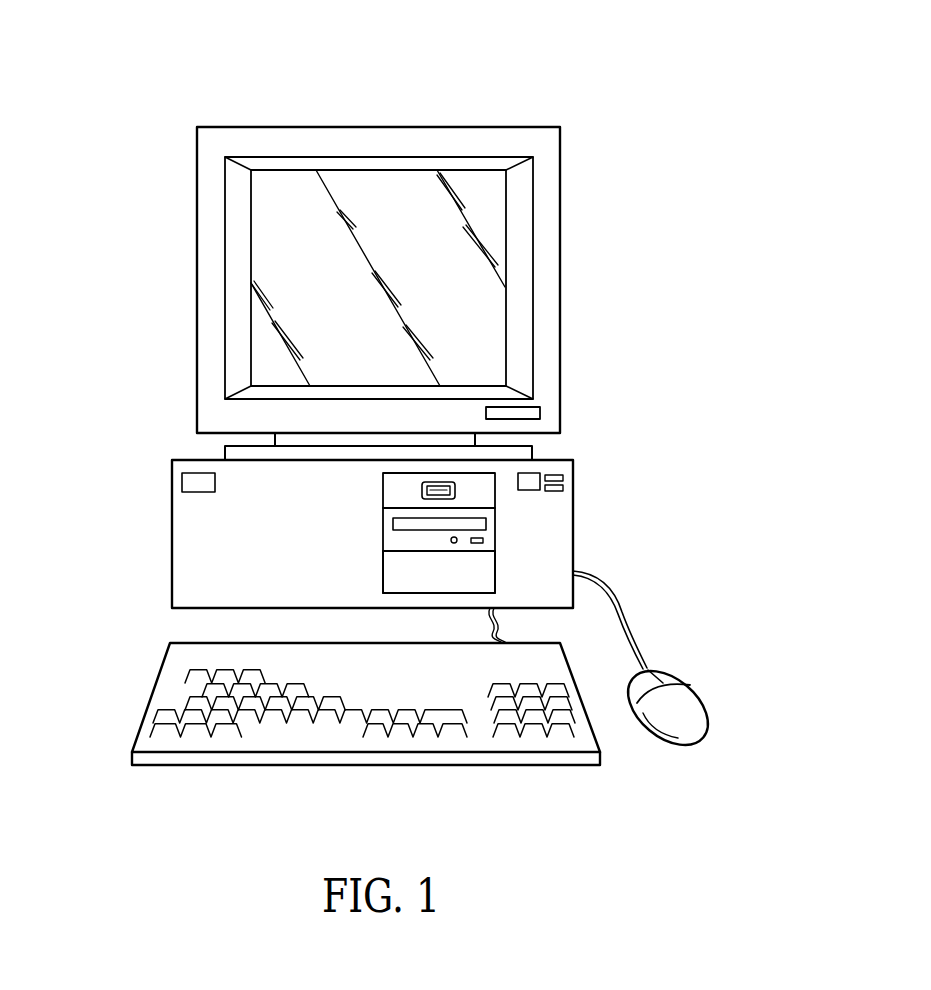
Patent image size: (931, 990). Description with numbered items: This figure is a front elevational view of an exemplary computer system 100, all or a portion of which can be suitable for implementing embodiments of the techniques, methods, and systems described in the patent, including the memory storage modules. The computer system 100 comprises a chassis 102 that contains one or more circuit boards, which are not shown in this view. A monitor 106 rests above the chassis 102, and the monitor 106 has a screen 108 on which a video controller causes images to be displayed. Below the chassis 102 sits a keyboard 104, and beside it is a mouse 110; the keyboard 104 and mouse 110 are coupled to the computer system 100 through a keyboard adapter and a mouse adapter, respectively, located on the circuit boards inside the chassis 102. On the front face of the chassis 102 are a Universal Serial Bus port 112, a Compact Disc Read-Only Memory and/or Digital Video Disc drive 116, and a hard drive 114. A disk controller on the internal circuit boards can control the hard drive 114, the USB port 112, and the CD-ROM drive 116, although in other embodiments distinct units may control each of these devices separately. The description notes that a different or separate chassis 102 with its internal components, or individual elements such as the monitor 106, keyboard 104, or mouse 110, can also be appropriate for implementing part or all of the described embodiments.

The computer system 100 is at (551, 105).
The chassis 102 is at (172, 537).
The keyboard 104 is at (153, 700).
The monitor 106 is at (270, 127).
The screen 108 is at (300, 283).
The mouse 110 is at (687, 697).
The Universal Serial Bus (USB) port 112 is at (457, 487).
The hard drive 114 is at (487, 570).
The Compact Disc Read-Only Memory (CD-ROM) and/or Digital Video Disc (DVD) drive 116 is at (487, 530).